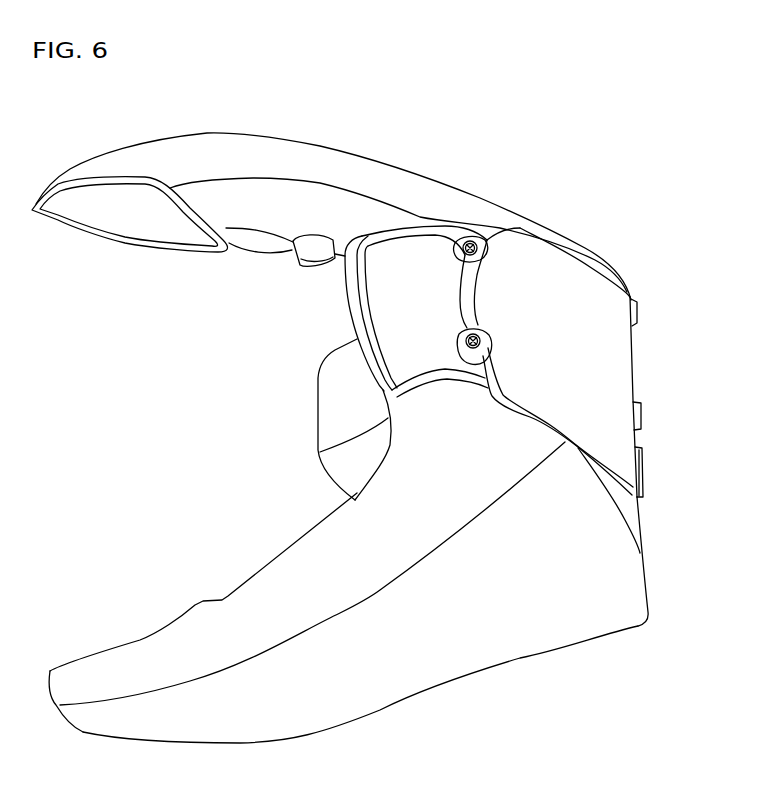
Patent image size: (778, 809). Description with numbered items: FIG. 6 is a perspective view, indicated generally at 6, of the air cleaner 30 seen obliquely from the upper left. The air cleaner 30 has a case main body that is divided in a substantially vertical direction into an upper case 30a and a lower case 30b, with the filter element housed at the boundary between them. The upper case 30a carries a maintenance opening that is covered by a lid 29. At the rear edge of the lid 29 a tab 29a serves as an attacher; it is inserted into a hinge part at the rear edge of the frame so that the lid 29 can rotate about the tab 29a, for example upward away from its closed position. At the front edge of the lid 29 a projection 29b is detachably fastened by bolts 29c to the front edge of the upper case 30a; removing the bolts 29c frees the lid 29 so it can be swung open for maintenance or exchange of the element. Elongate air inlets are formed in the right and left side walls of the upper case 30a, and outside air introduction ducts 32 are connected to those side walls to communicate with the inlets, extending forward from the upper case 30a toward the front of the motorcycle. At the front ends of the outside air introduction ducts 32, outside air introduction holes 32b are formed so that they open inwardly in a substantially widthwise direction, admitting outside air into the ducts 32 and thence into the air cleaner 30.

The helmet chin guard assembly 6 is at (611, 207).
The lid 29 is at (607, 353).
The tab 29a is at (641, 310).
The projection 29b is at (457, 253).
The bolts 29c is at (461, 262).
The air cleaner 30 is at (344, 305).
The upper case 30a is at (380, 314).
The lower case 30b is at (318, 420).
The outside air introduction ducts 32 is at (346, 156).
The outside air introduction holes 32b is at (153, 236).